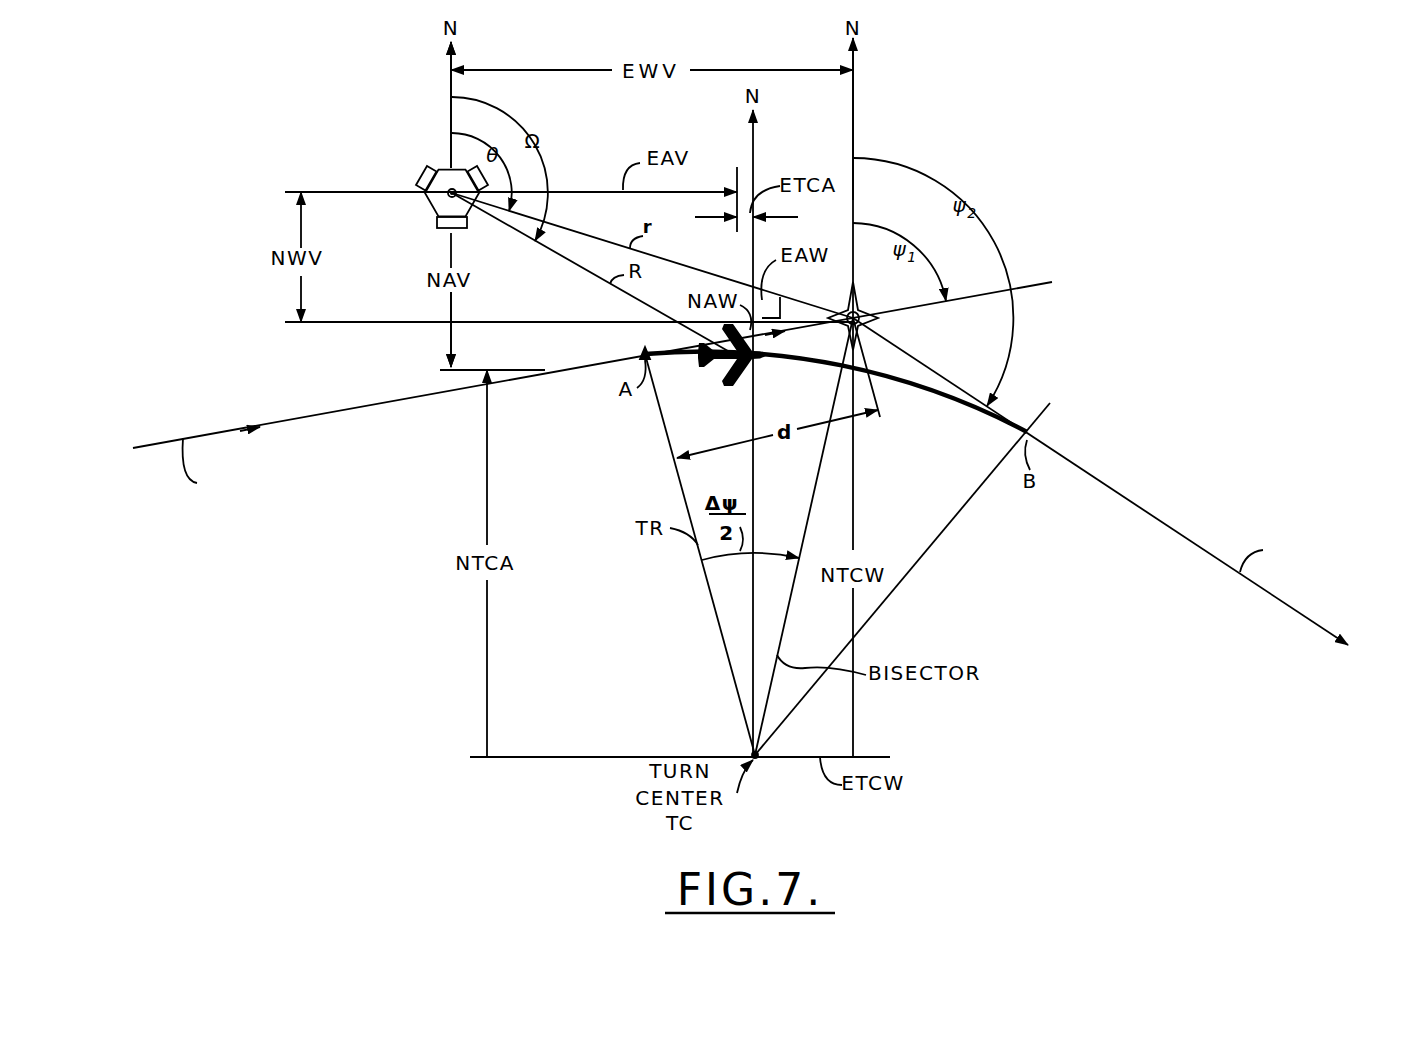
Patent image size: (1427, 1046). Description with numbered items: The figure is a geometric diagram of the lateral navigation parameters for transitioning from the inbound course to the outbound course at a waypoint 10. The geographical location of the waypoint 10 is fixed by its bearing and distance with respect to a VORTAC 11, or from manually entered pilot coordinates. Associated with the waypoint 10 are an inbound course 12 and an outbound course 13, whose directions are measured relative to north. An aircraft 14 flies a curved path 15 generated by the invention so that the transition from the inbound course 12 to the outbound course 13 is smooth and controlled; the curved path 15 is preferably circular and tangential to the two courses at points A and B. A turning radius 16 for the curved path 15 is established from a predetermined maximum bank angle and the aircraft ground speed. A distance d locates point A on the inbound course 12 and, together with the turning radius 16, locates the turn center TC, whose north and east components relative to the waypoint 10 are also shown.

The waypoint 10 is at (882, 317).
The VORTAC 11 is at (427, 210).
The inbound course 12 is at (320, 413).
The outbound course 13 is at (1128, 497).
The aircraft 14 is at (718, 366).
The curved path 15 is at (922, 388).
The turning radius 16 is at (680, 483).